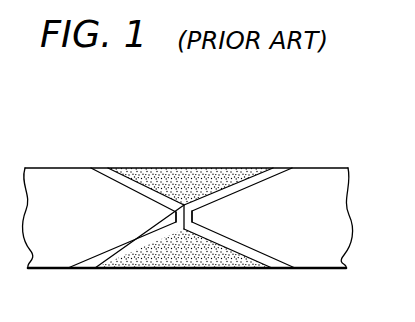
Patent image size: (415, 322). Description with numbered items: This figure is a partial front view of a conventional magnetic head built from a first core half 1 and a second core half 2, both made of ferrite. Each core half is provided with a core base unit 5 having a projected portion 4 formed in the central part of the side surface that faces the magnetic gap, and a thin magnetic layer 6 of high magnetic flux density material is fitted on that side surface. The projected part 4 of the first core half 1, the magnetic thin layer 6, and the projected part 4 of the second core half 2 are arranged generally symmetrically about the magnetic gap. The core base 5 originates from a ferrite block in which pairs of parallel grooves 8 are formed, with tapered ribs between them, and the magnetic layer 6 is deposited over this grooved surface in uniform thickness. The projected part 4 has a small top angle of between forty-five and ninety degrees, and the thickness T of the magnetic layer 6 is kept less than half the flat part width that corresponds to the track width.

The first core half 1 is at (80, 157).
The second core half 2 is at (268, 164).
The projected portion 4 is at (165, 218).
The core base unit 5 is at (52, 240).
The thin magnetic layer 6 is at (127, 257).
The parallel grooves 8 is at (212, 176).
The thickness of the magnetic layer T is at (130, 212).